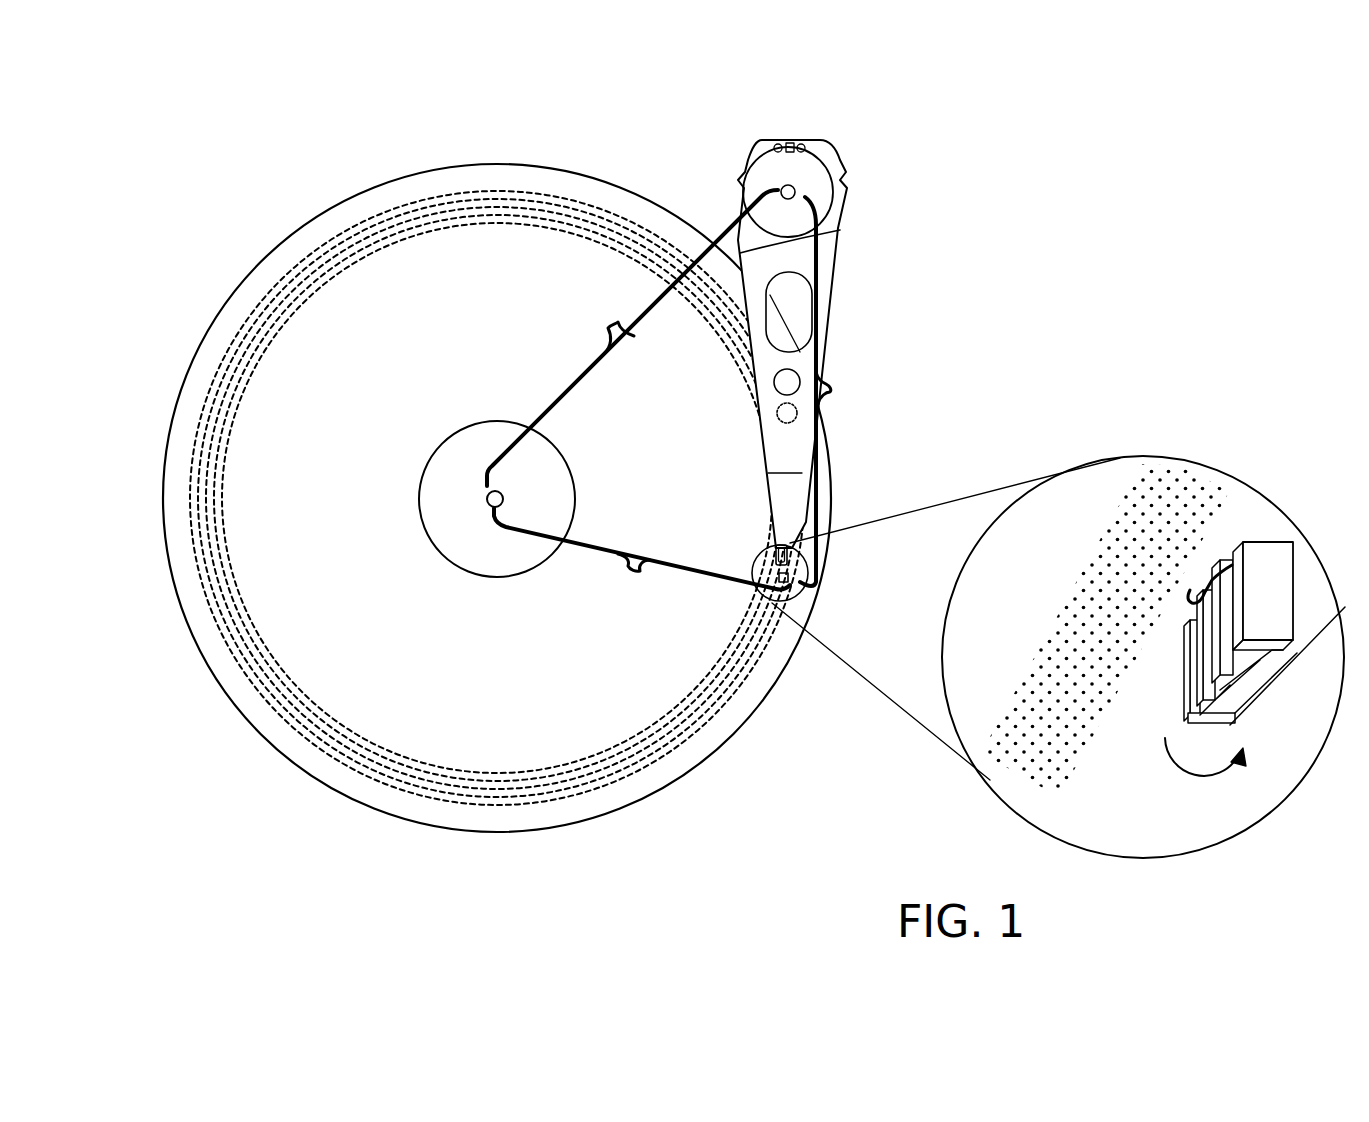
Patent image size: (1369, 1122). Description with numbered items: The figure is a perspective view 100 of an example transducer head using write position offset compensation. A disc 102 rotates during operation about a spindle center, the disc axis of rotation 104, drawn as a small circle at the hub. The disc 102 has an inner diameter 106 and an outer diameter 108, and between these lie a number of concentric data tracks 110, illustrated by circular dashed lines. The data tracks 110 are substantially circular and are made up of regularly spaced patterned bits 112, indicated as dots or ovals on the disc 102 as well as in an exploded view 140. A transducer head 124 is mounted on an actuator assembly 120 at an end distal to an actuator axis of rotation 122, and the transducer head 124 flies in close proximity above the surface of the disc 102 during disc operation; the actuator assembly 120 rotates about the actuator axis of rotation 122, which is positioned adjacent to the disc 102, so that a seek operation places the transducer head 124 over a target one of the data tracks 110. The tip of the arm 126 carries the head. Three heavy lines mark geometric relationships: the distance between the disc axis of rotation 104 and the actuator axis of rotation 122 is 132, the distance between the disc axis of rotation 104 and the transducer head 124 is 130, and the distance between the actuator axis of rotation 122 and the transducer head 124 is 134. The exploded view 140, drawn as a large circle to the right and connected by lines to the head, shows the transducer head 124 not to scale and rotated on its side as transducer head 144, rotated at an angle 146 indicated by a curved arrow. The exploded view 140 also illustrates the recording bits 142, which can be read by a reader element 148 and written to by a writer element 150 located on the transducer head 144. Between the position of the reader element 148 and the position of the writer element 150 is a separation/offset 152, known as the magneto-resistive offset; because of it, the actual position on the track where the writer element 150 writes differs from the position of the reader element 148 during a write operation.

The perspective view 100 is at (238, 144).
The disc 102 is at (570, 172).
The disc axis of rotation 104 is at (488, 494).
The inner diameter 106 is at (462, 425).
The outer diameter 108 is at (372, 215).
The data tracks 110 is at (237, 655).
The patterned bits 112 is at (322, 735).
The actuator assembly 120 is at (835, 277).
The actuator axis of rotation 122 is at (800, 190).
The transducer head 124 is at (798, 572).
The load beam 126 is at (765, 500).
The distance between disc axis of rotation and transducer head 130 is at (627, 604).
The distance between disc axis of rotation and actuator axis of rotation 132 is at (599, 294).
The distance between actuator axis of rotation and transducer head 134 is at (858, 389).
The exploded view 140 is at (1058, 632).
The recording bits 142 is at (1063, 797).
The transducer head 144 is at (1276, 545).
The angle 146 is at (1203, 790).
The reader element 148 is at (1233, 560).
The writer element 150 is at (1192, 637).
The separation/offset 152 is at (1195, 577).